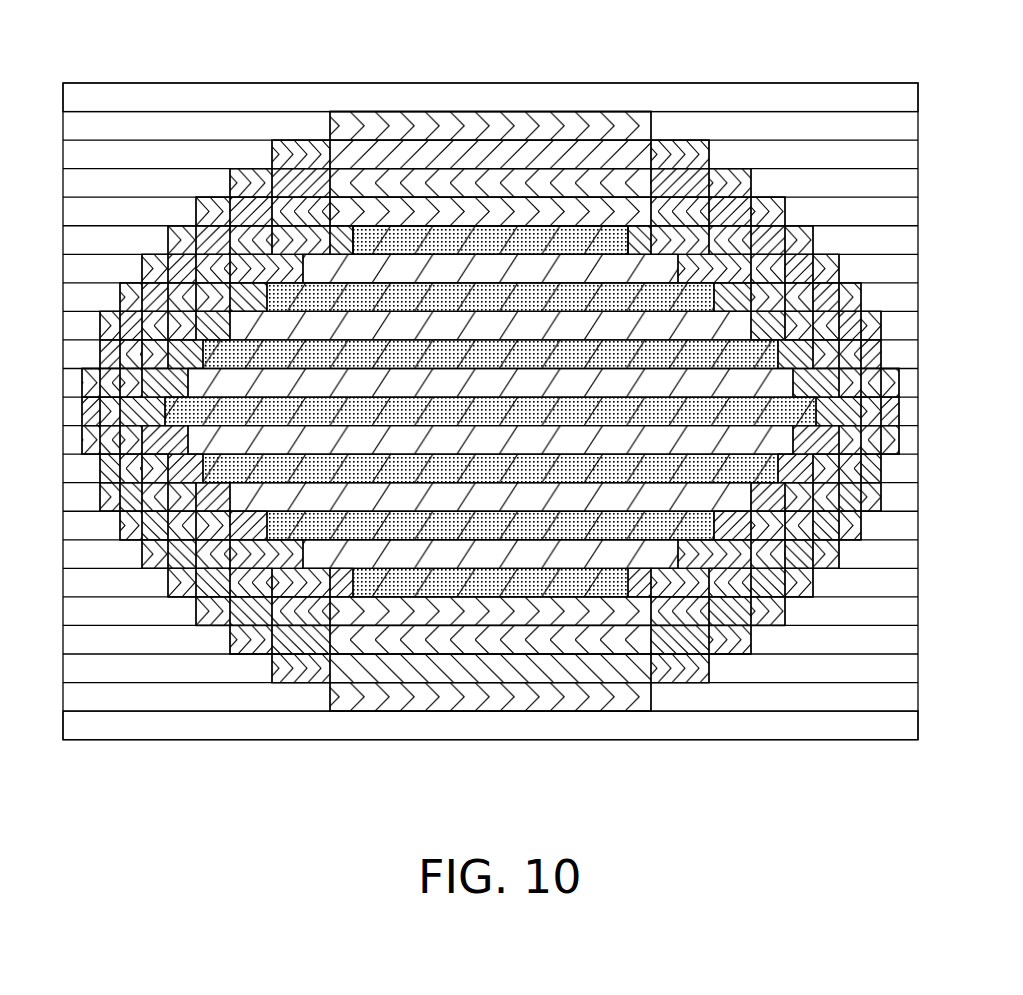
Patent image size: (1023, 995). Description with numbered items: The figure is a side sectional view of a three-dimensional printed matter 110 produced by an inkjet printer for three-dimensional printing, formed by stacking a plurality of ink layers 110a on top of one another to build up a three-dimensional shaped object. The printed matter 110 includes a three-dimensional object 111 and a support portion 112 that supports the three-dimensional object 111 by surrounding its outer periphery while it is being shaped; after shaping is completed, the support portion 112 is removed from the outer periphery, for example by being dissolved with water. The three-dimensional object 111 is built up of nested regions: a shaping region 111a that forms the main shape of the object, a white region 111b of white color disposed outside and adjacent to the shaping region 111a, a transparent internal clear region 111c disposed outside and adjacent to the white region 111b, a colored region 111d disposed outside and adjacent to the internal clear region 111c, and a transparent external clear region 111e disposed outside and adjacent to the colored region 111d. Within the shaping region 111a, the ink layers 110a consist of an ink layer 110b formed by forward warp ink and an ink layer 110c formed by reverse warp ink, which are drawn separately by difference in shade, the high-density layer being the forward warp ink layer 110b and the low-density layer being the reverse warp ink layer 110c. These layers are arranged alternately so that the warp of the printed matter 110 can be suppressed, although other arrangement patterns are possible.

The three-dimensional printed matter 110 is at (98, 74).
The ink layer 110a is at (850, 102).
The ink layer formed by forward warp ink 110b is at (637, 238).
The ink layer formed by reverse warp ink 110c is at (637, 268).
The three-dimensional object 111 is at (337, 128).
The shaping region 111a is at (388, 224).
The white region 111b is at (440, 212).
The internal clear region 111c is at (497, 192).
The colored region 111d is at (561, 152).
The external clear region 111e is at (605, 122).
The support portion 112 is at (207, 719).